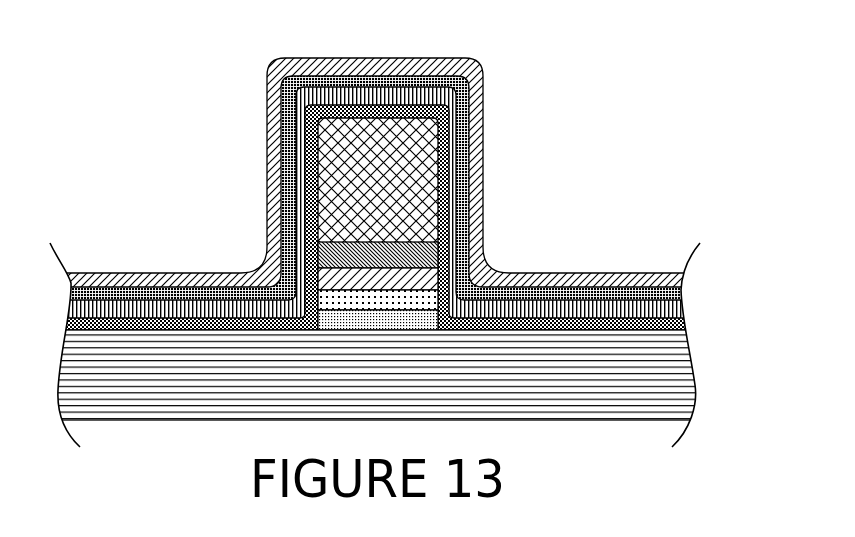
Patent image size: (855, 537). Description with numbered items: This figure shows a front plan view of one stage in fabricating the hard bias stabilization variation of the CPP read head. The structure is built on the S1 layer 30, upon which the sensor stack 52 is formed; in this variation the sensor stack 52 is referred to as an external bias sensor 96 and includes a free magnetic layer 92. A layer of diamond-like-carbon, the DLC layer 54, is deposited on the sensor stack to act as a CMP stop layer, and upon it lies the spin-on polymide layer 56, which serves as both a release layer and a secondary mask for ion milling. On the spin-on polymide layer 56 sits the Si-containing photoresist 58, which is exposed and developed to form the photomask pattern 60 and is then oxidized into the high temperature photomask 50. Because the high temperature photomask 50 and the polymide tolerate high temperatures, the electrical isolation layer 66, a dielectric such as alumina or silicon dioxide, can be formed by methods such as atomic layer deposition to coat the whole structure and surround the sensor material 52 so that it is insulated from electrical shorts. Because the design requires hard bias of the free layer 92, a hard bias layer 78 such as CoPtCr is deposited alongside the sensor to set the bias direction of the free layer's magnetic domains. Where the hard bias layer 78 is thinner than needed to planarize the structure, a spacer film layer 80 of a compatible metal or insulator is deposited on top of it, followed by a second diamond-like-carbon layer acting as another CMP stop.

The S1 layer 30 is at (695, 387).
The sensor stack 52 is at (380, 194).
The external bias sensor 96 is at (607, 277).
The spacer film layer 80 is at (475, 152).
The hard bias layer 78 is at (478, 200).
The electrical isolation layer 66 is at (360, 107).
The Si-containing photoresist 58 is at (290, 178).
The photomask pattern 60 is at (290, 178).
The high temperature photomask 50 is at (322, 140).
The spin-on polymide layer 56 is at (430, 258).
The DLC layer 54 is at (449, 312).
The free magnetic layer 92 is at (320, 302).